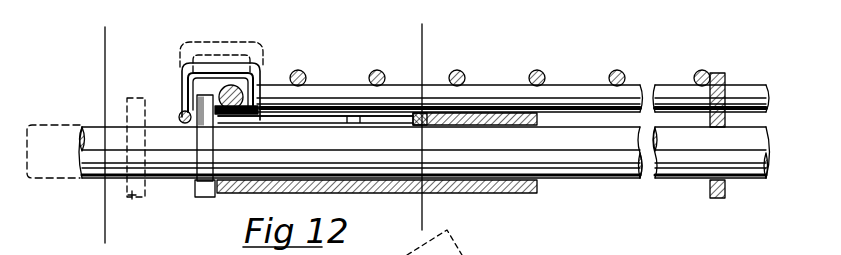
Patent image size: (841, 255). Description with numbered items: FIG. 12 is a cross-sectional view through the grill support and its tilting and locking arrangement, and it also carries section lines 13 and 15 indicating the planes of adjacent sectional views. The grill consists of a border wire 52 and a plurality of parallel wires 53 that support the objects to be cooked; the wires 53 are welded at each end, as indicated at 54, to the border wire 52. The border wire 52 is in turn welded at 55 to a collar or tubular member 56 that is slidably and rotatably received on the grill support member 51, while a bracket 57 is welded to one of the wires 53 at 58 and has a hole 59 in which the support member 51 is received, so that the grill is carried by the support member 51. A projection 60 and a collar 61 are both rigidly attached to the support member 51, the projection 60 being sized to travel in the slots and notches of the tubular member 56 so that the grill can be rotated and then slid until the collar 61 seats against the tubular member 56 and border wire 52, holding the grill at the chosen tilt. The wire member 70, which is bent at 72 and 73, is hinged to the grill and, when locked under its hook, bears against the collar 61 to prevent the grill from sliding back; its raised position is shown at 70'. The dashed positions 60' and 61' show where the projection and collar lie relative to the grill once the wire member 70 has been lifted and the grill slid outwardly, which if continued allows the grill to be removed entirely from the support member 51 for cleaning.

The section line 13- 13 is at (105, 27).
The section line 15- 15 is at (422, 24).
The grill support member 51 is at (557, 178).
The border wire 52 is at (573, 93).
The parallel wires 53 is at (528, 75).
The weld 54 is at (368, 80).
The weld 55 is at (228, 114).
The collar or tubular member 56 is at (487, 192).
The bracket 57 is at (716, 199).
The weld 58 is at (716, 73).
The hole 59 is at (728, 182).
The projection 60 is at (377, 94).
The projection (slid-out position) 60' is at (315, 91).
The collar 61 is at (208, 159).
The collar (slid-out position) 61' is at (140, 160).
The wire member 70 is at (172, 110).
The wire member (raised position) 70' is at (203, 91).
The bend 72 is at (189, 66).
The bend 73 is at (259, 67).